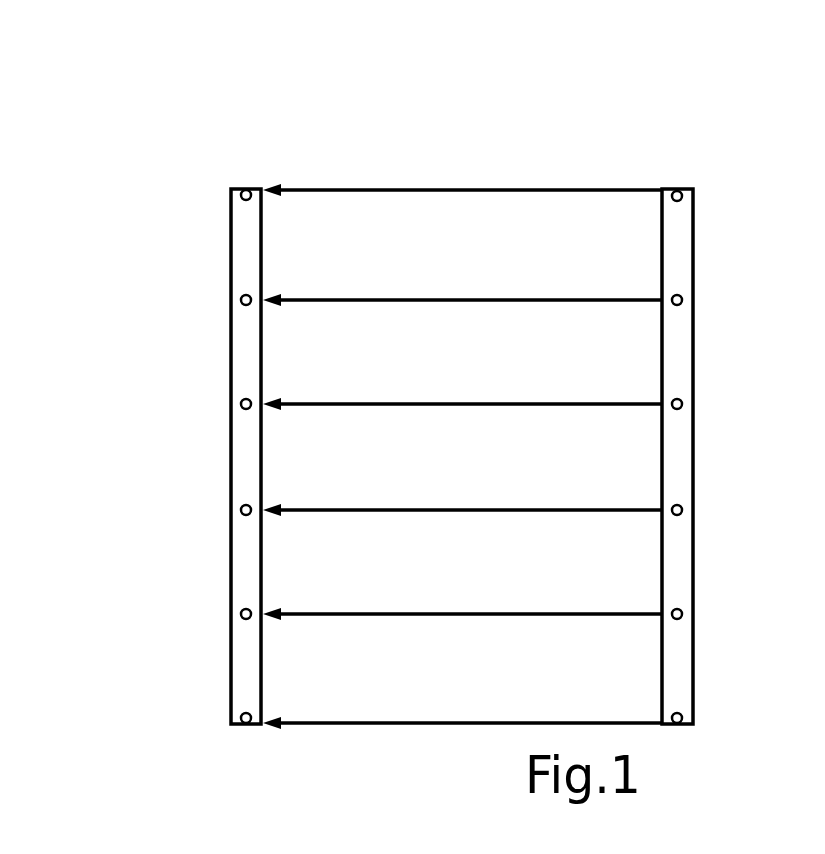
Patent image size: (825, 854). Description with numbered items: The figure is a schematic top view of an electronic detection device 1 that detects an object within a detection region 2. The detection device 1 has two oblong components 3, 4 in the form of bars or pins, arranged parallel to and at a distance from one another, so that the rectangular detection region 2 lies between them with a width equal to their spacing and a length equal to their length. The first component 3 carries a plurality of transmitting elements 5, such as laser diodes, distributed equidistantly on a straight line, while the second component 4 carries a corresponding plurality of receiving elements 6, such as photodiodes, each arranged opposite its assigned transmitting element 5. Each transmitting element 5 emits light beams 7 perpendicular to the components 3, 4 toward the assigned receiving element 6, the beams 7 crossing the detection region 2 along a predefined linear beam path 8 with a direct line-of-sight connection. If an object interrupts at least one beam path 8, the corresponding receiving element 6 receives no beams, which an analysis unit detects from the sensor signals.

The electronic detection device 1 is at (252, 114).
The detection region 2 is at (488, 364).
The first component 3 is at (680, 346).
The second component 4 is at (243, 347).
The transmitting elements 5 is at (682, 192).
The receiving elements 6 is at (242, 191).
The light beams 7 is at (489, 189).
The beam path 8 is at (383, 189).